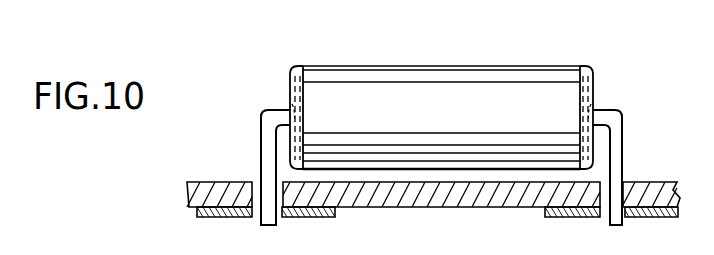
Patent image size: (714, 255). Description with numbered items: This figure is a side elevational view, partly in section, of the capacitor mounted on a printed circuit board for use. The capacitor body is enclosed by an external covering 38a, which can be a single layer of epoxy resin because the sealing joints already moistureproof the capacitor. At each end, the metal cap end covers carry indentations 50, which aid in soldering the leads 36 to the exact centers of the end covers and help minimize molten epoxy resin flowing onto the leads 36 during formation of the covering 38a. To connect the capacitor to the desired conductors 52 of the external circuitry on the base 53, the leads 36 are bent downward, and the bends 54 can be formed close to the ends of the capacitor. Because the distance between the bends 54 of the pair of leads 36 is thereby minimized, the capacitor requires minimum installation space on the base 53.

The external covering 38a is at (352, 68).
The indentations 50 is at (291, 102).
The bends 54 is at (262, 110).
The leads 36 is at (263, 153).
The base 53 is at (471, 203).
The conductors 52 is at (233, 212).